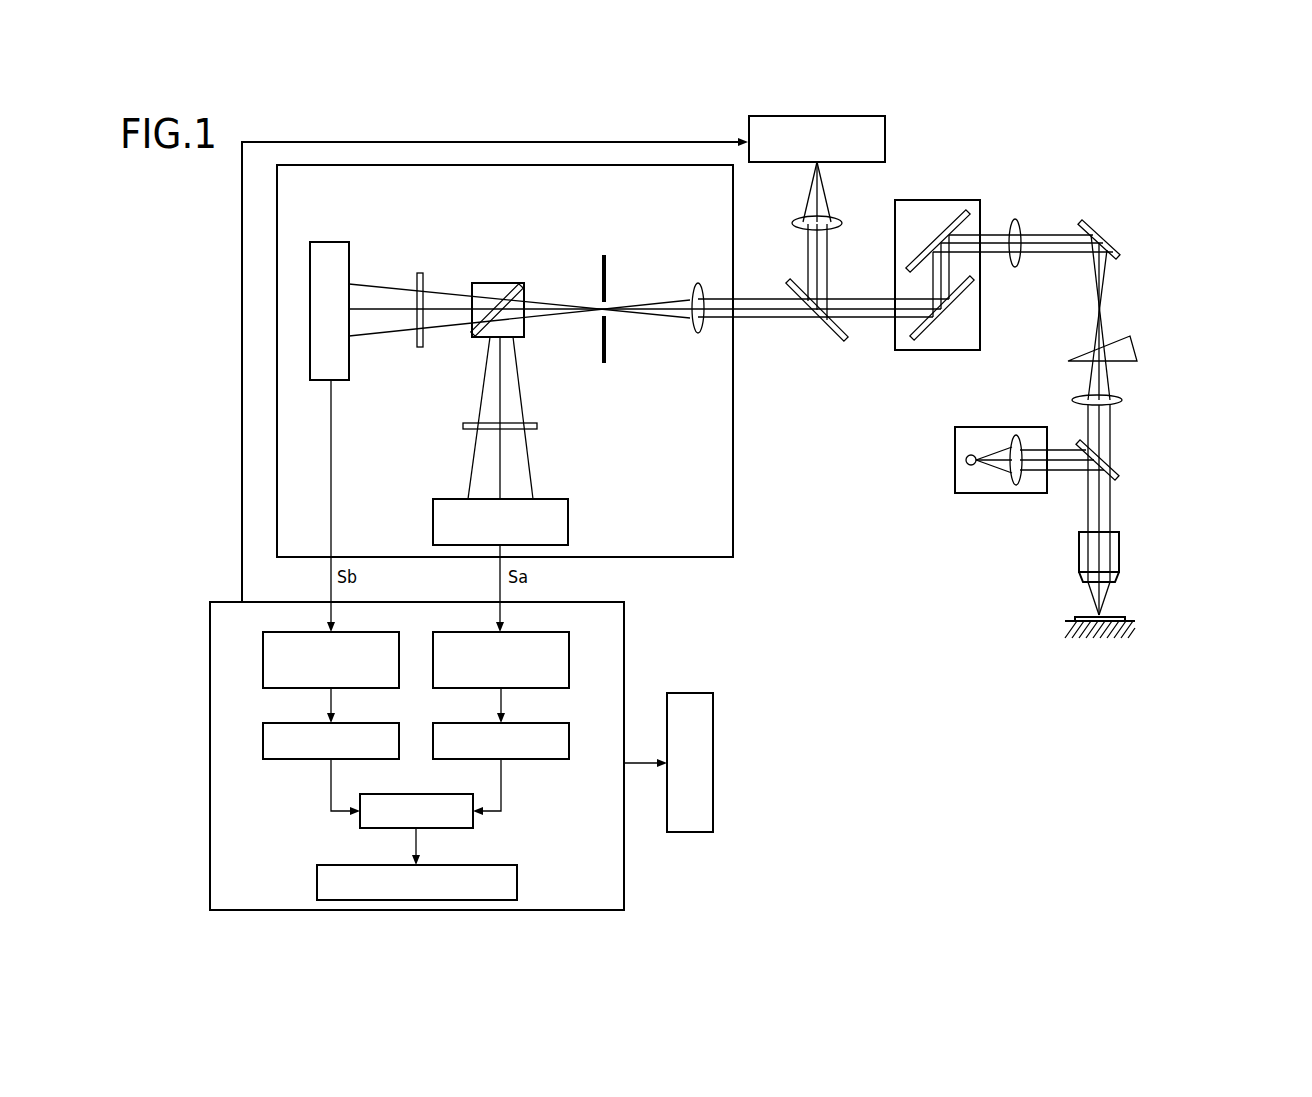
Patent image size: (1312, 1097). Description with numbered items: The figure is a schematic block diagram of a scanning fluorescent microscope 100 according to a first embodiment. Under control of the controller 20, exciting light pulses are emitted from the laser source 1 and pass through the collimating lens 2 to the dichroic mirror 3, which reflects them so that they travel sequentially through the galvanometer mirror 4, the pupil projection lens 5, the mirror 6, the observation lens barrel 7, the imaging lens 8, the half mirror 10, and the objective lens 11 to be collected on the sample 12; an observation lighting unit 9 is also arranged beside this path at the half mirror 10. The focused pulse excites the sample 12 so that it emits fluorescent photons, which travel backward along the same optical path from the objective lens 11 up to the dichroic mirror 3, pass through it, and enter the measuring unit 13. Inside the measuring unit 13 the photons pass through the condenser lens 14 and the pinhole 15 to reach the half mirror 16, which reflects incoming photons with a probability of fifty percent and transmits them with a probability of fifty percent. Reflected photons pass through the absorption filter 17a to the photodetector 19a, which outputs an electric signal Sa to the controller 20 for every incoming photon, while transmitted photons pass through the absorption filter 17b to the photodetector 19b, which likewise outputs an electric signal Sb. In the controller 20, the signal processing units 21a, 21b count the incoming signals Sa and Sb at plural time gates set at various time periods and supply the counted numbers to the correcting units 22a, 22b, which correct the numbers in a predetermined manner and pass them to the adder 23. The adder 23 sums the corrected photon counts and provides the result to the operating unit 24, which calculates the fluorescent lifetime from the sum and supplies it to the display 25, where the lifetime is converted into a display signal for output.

The scanning fluorescent microscope 100 is at (1175, 177).
The laser source 1 is at (886, 141).
The collimating lens 2 is at (836, 216).
The dichroic mirror 3 is at (828, 330).
The galvanometer mirror 4 is at (975, 198).
The pupil projection lens 5 is at (1015, 268).
The mirror 6 is at (1132, 229).
The observation lens barrel 7 is at (1138, 346).
The imaging lens 8 is at (1124, 401).
The observation lighting unit 9 is at (1000, 494).
The half mirror 10 is at (1118, 465).
The objective lens 11 is at (1125, 552).
The sample 12 is at (1123, 618).
The measuring unit 13 is at (630, 163).
The condenser lens 14 is at (696, 283).
The pinhole 15 is at (605, 360).
The half mirror 16 is at (507, 283).
The absorption filter 17a is at (540, 427).
The absorption filter 17b is at (420, 350).
The photodetector 19a is at (568, 512).
The photodetector 19b is at (330, 242).
The controller 20 is at (596, 602).
The signal processing unit 21a is at (553, 632).
The signal processing unit 21b is at (383, 632).
The correcting unit 22a is at (553, 723).
The correcting unit 22b is at (383, 723).
The adder 23 is at (450, 794).
The operating unit 24 is at (489, 865).
The display 25 is at (687, 693).